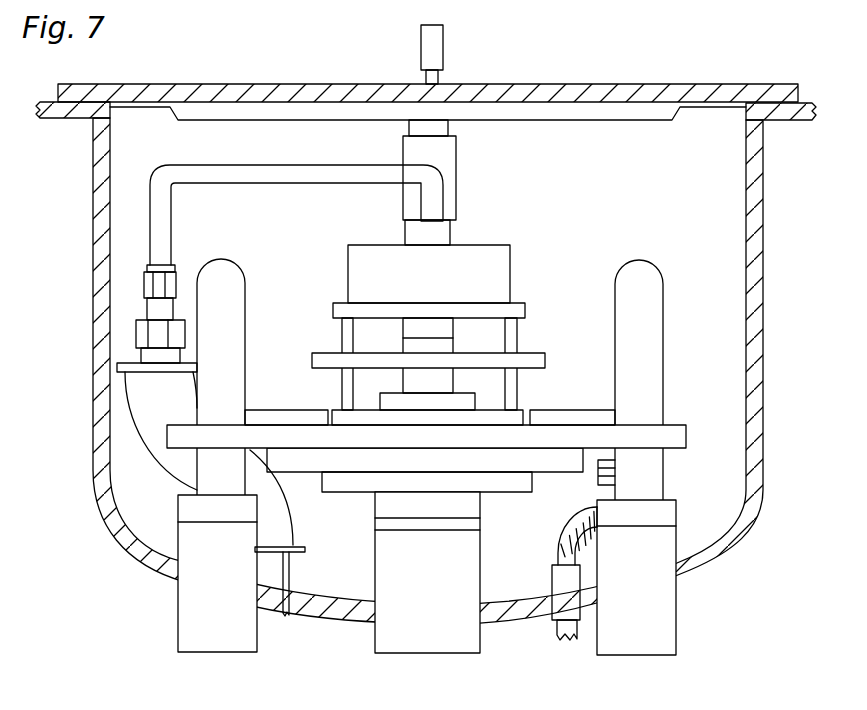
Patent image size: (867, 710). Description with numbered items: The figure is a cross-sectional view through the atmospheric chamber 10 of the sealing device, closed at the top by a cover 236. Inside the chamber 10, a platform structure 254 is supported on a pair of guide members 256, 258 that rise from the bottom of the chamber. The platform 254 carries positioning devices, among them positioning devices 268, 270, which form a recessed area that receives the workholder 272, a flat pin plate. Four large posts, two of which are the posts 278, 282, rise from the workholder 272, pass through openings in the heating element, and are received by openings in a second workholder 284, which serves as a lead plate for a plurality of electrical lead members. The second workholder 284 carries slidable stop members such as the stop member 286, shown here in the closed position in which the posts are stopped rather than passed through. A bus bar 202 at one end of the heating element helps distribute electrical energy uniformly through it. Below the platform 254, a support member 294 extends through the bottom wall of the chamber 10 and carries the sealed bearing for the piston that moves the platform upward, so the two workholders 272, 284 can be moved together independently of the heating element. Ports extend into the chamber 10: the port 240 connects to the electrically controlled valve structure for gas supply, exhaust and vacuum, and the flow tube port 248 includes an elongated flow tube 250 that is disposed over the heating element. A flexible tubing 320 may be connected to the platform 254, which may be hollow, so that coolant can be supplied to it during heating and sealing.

The atmospheric chamber 10 is at (676, 185).
The cover 236 is at (503, 100).
The elongated flow tube 250 is at (268, 168).
The guide member 258 is at (233, 316).
The guide member 256 is at (653, 316).
The platform structure 254 is at (663, 433).
The stop member 286 is at (510, 262).
The second workholder 284 is at (487, 306).
The large post 282 is at (342, 331).
The large post 278 is at (520, 332).
The bus bar 202 is at (525, 368).
The workholder 272 is at (480, 412).
The positioning device 270 is at (557, 421).
The positioning device 268 is at (313, 400).
The port 240 is at (598, 478).
The support member 294 is at (388, 548).
The flexible tubing 320 is at (566, 530).
The flow tube port 248 is at (282, 572).